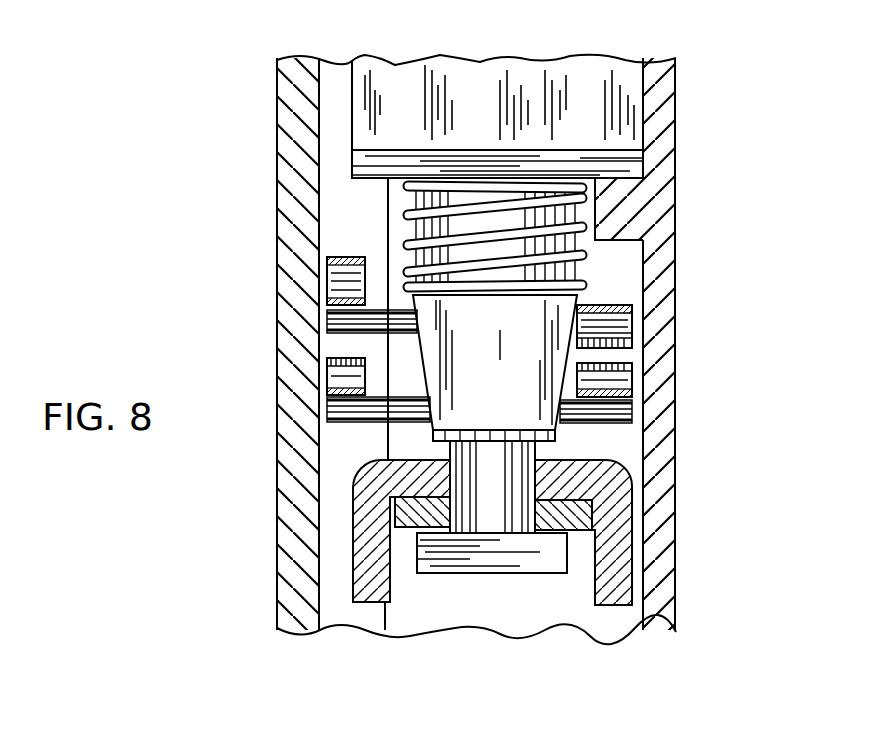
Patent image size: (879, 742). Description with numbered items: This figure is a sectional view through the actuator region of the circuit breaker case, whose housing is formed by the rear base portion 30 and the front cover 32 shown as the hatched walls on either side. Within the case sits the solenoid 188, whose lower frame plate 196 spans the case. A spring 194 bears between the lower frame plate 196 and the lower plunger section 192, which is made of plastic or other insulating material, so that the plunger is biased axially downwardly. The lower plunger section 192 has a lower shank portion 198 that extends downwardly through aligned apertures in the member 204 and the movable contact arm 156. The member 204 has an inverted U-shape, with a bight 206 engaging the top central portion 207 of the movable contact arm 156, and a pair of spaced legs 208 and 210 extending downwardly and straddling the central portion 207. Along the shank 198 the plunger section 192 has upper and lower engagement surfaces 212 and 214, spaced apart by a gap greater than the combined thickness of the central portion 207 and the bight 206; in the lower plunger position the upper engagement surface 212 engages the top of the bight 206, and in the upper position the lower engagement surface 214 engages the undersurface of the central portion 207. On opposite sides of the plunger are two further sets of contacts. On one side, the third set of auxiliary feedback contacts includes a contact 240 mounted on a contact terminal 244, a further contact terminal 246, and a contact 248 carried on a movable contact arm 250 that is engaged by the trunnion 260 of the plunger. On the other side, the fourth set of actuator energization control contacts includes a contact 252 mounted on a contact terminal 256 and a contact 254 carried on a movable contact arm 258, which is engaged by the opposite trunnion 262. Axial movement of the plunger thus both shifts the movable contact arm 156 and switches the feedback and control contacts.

The rear base portion 30 is at (657, 58).
The front cover 32 is at (283, 60).
The solenoid 188 is at (390, 74).
The lower frame plate 196 is at (352, 160).
The spring 194 is at (400, 212).
The lower plunger section 192 is at (433, 369).
The contact terminal 246 is at (327, 262).
The movable contact arm 250 is at (327, 302).
The trunnion 260 is at (327, 320).
The contact 248 is at (327, 362).
The contact 240 is at (327, 384).
The contact terminal 244 is at (327, 410).
The movable contact arm 258 is at (628, 302).
The trunnion 262 is at (632, 318).
The contact 254 is at (632, 345).
The contact 252 is at (632, 374).
The contact terminal 256 is at (632, 416).
The lower shank portion 198 is at (452, 456).
The upper engagement surface 212 is at (546, 441).
The bight 206 is at (622, 481).
The member 204 is at (632, 483).
The top central portion 207 is at (585, 526).
The movable contact arm 156 is at (630, 540).
The lower engagement surface 214 is at (585, 534).
The leg 208 is at (369, 597).
The leg 210 is at (603, 607).